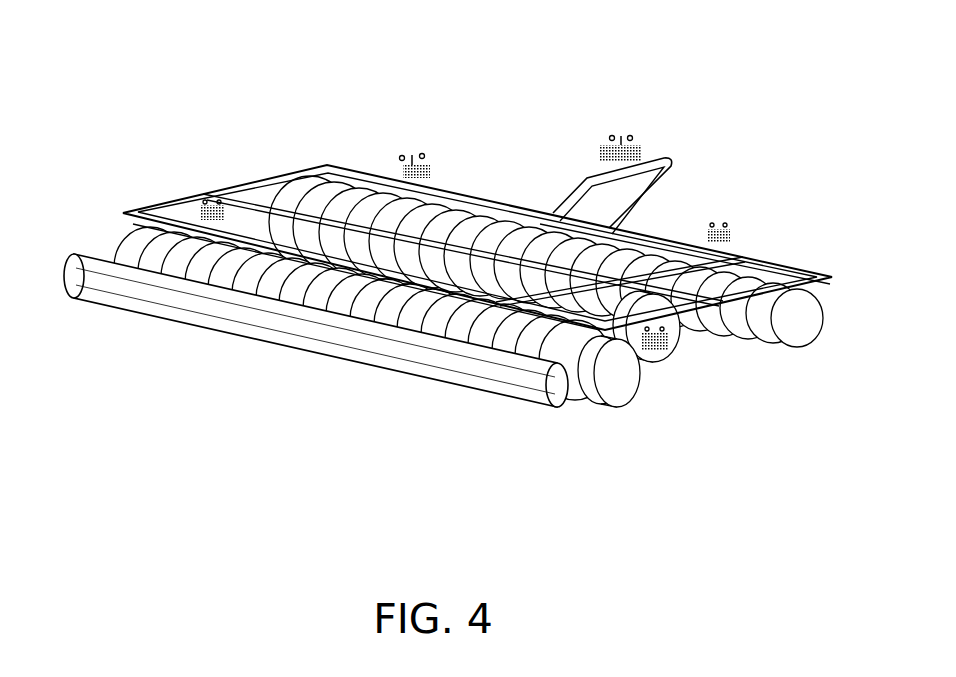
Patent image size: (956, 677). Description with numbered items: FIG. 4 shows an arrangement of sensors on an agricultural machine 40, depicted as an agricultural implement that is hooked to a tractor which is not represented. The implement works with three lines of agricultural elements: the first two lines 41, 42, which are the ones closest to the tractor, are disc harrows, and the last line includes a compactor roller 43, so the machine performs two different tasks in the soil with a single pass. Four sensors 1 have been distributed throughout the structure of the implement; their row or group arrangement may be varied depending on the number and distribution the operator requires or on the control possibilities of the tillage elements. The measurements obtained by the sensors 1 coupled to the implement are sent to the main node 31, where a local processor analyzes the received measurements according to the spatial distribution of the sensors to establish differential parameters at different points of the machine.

The sensors 1 is at (222, 216).
The main node 31 is at (630, 148).
The agricultural machine 40 is at (228, 401).
The first line of agricultural elements 41 is at (799, 337).
The second line of agricultural elements 42 is at (623, 397).
The compactor roller 43 is at (400, 368).